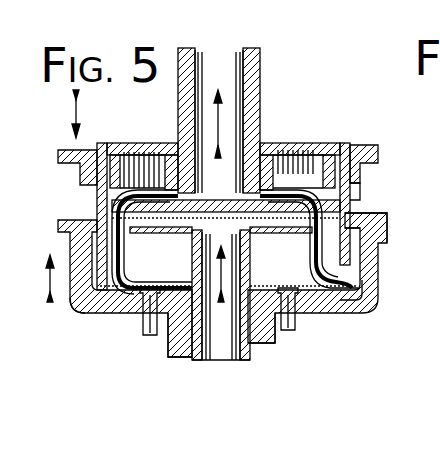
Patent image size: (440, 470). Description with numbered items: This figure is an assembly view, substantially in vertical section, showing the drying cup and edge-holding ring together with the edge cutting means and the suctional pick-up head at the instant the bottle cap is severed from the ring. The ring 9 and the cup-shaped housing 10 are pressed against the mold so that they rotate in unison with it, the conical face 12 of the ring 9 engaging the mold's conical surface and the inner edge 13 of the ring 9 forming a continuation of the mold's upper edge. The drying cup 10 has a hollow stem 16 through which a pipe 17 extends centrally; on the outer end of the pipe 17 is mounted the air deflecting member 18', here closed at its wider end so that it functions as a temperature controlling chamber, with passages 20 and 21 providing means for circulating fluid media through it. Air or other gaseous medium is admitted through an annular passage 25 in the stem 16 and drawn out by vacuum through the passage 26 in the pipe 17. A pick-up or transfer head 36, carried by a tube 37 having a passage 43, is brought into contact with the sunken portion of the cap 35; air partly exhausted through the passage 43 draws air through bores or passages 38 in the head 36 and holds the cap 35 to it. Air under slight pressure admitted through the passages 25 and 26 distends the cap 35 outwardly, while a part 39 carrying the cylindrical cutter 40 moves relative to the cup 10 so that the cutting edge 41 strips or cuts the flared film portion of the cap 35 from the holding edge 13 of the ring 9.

The ring 9 is at (376, 218).
The cup-shaped housing 10 is at (378, 262).
The conical face 12 is at (97, 218).
The inner edge 13 is at (345, 257).
The hollow stem 16 is at (268, 342).
The pipe 17 is at (208, 358).
The air deflecting member 18' is at (370, 320).
The passage 20 is at (147, 334).
The passage 21 is at (291, 331).
The annular passage 25 is at (193, 356).
The passage 26 is at (225, 345).
The cap 35 is at (387, 226).
The transfer head 36 is at (288, 142).
The tube 37 is at (262, 92).
The bores or passages 38 is at (160, 145).
The part 39 is at (362, 147).
The cylindrical cutter 40 is at (352, 192).
The cutting edge 41 is at (78, 310).
The passage 43 is at (201, 68).